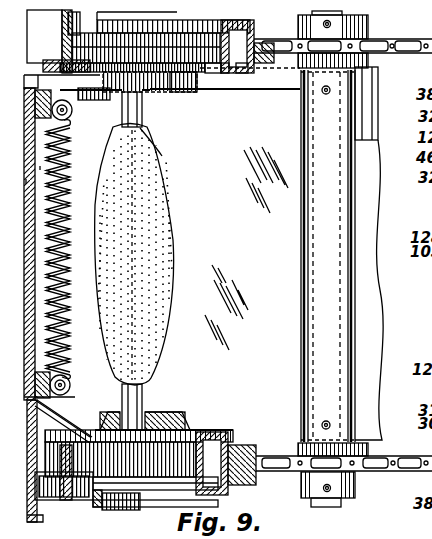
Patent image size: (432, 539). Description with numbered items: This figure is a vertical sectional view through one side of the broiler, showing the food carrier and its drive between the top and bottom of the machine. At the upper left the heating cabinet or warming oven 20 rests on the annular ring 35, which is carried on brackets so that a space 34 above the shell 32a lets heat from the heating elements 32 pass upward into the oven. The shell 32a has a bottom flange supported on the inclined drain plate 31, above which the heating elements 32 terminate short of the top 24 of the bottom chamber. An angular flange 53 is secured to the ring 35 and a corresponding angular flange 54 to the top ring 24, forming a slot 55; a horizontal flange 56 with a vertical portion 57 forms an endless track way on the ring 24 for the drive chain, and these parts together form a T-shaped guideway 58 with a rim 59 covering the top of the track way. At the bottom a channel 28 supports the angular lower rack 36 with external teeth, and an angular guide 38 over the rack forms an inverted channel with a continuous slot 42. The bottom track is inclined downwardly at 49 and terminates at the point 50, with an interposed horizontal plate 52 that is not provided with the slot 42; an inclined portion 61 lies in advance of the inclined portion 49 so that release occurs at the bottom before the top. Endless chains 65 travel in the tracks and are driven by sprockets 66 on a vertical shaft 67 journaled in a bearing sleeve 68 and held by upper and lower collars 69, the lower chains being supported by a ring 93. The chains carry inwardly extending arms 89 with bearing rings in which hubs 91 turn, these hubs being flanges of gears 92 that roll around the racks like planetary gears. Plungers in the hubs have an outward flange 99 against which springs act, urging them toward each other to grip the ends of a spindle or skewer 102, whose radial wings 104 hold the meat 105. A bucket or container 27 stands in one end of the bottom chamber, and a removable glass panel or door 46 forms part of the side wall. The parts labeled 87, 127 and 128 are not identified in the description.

The heating cabinet or warming oven 20 is at (62, 49).
The annular ring 35 is at (51, 41).
The hub 91 is at (170, 503).
The gear 87 is at (146, 31).
The inwardly extending arm 89 is at (173, 17).
The vertical portion 57 is at (232, 24).
The rim 59 is at (240, 22).
The endless drive member or chain 65 is at (256, 40).
The sprocket 66 is at (400, 52).
The vertical shaft 67 is at (330, 15).
The collar 69 is at (360, 24).
The top 24 is at (272, 70).
The horizontal flange 56 is at (242, 70).
The T-shaped guideway 58 is at (223, 74).
The angular flange 53 is at (216, 74).
The inclined portion 61 is at (160, 92).
The gear 92 is at (190, 92).
The flange 99 is at (142, 112).
The slot 55 is at (105, 100).
The angular flange 54 is at (72, 112).
The spring 127 is at (48, 134).
The spring guide 128 is at (40, 163).
The shell 32a is at (26, 181).
The heating element 32 is at (58, 212).
The plate 31 is at (69, 383).
The angular guide 38 is at (55, 406).
The slot 42 is at (88, 412).
The spindle or skewer 102 is at (157, 157).
The meat 105 is at (160, 178).
The radial wing 104 is at (148, 193).
The removable panel or door 46 is at (372, 218).
The bearing sleeve 68 is at (301, 306).
The inclined portion 49 is at (166, 416).
The point 50 is at (192, 432).
The horizontal plate 52 is at (200, 440).
The ring 93 is at (232, 485).
The lower rack 36 is at (72, 497).
The channel 28 is at (76, 498).
The bucket or container 27 is at (106, 500).
The space 34 is at (128, 510).